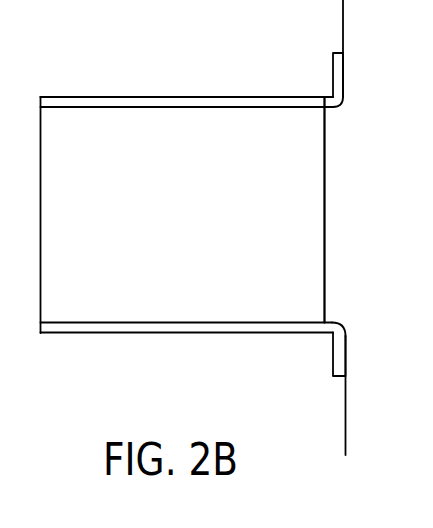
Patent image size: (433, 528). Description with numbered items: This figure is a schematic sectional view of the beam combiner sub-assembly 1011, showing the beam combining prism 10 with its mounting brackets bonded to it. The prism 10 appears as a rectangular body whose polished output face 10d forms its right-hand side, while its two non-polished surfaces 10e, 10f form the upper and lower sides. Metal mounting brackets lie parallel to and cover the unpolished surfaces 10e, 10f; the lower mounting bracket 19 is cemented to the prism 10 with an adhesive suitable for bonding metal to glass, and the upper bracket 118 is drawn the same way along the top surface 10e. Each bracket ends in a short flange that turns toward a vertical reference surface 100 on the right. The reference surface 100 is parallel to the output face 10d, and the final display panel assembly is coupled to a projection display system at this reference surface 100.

The beam combining prism 10 is at (196, 232).
The output face 10d is at (326, 212).
The non-polished surface 10e is at (133, 107).
The non-polished surface 10f is at (127, 322).
The mounting bracket 19 is at (334, 352).
The reference surface 100 is at (344, 28).
The upper flange 118 is at (332, 72).
The beam combiner sub-assembly 1011 is at (183, 82).